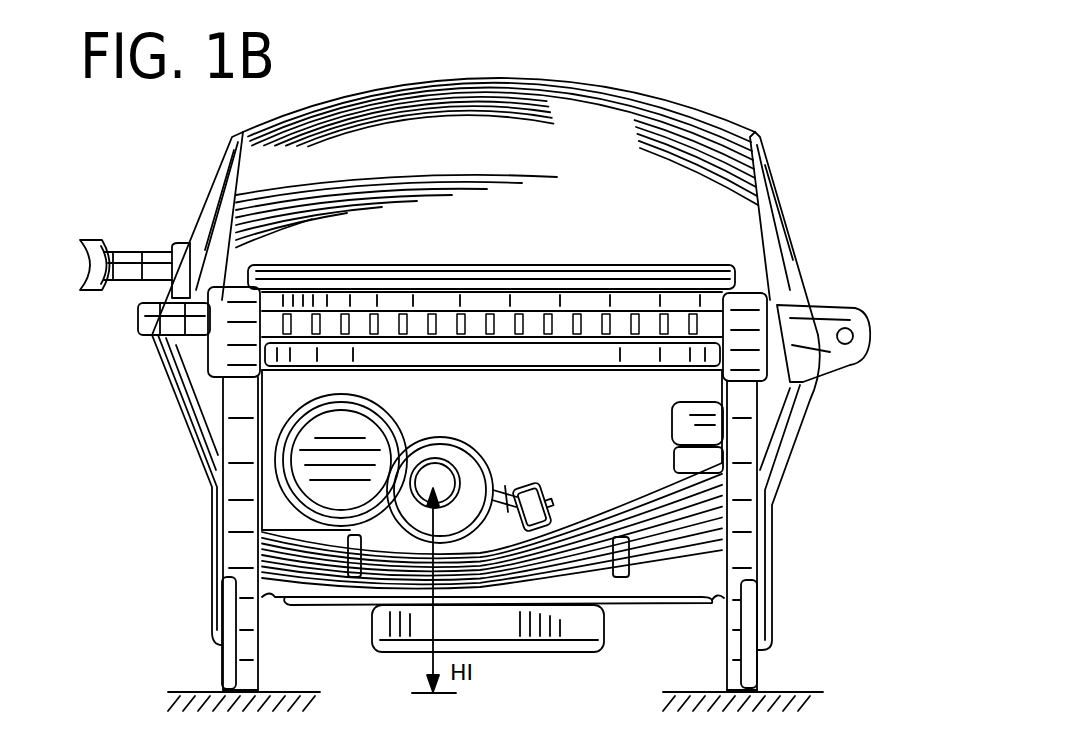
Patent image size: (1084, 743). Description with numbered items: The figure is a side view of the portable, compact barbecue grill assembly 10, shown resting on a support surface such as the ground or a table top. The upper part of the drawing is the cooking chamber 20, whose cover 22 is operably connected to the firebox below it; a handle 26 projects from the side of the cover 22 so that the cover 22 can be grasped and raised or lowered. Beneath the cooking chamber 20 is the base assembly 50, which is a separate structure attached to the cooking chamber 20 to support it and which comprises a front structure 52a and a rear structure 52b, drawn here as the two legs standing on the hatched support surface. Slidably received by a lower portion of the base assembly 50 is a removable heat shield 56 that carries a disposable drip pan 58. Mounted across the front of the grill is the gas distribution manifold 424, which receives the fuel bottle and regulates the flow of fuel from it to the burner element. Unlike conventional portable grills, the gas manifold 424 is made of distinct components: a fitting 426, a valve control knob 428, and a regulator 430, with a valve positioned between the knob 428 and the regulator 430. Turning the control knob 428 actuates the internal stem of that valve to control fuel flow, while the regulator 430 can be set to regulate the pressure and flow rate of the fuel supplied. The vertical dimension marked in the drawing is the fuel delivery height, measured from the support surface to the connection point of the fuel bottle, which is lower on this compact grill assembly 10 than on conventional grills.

The barbecue grill assembly 10 is at (828, 181).
The cooking chamber 20 is at (794, 141).
The cover 22 is at (680, 140).
The handle 26 is at (128, 265).
The base assembly 50 is at (793, 545).
The front structure 52a is at (237, 518).
The rear structure 52b is at (748, 488).
The heat shield 56 is at (670, 608).
The drip pan 58 is at (562, 636).
The gas distribution manifold 424 is at (477, 415).
The fitting 426 is at (532, 498).
The valve control knob 428 is at (368, 432).
The regulator 430 is at (467, 458).